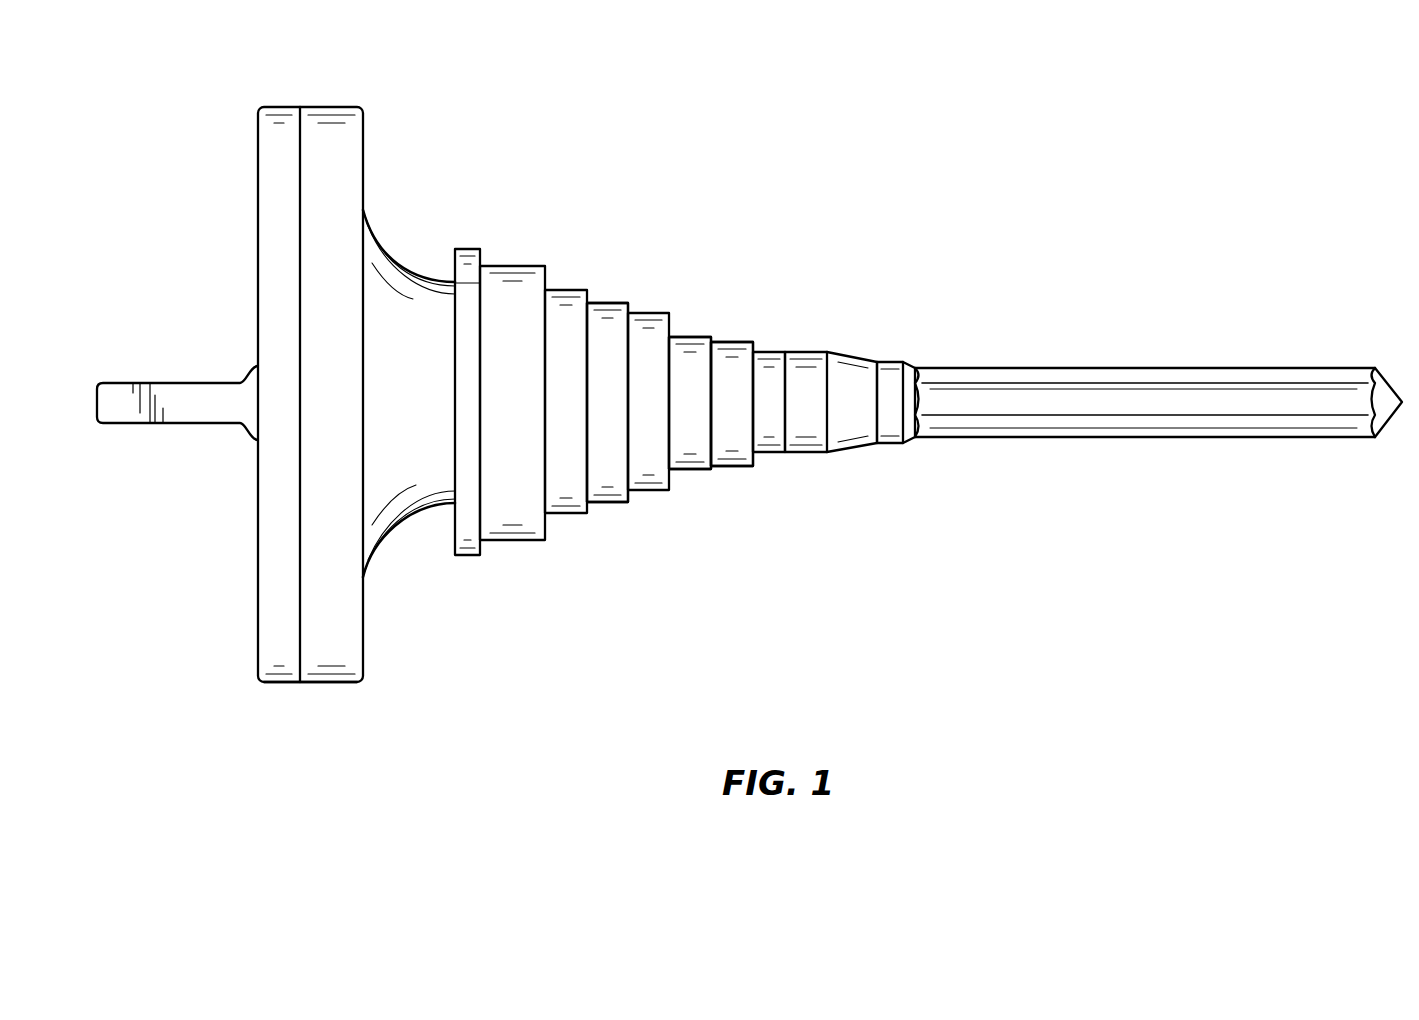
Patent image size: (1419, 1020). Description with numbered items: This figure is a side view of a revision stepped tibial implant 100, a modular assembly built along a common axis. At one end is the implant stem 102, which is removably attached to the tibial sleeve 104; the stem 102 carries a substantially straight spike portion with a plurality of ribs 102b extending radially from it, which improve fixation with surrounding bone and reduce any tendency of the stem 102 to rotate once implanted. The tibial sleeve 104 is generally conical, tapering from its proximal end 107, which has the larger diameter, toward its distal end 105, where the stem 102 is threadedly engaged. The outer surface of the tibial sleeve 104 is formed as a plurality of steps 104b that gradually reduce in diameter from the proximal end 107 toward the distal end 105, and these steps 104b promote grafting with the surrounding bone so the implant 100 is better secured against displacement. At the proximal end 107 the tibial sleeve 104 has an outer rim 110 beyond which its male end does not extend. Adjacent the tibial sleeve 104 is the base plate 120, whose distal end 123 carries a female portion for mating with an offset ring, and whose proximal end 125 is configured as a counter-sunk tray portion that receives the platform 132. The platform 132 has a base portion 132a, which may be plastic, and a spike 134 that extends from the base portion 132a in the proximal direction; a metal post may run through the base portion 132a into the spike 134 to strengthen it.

The revision stepped tibial implant 100 is at (588, 627).
The implant stem 102 is at (1202, 466).
The ribs 102b is at (1090, 431).
The tibial sleeve 104 is at (707, 471).
The steps 104b is at (607, 503).
The distal end 105 is at (741, 476).
The proximal end 107 is at (452, 571).
The outer rim 110 is at (468, 556).
The base plate 120 is at (287, 439).
The distal end 123 is at (420, 524).
The proximal end 125 is at (327, 704).
The platform 132 is at (253, 394).
The base portion 132a is at (280, 253).
The spike 134 is at (183, 410).